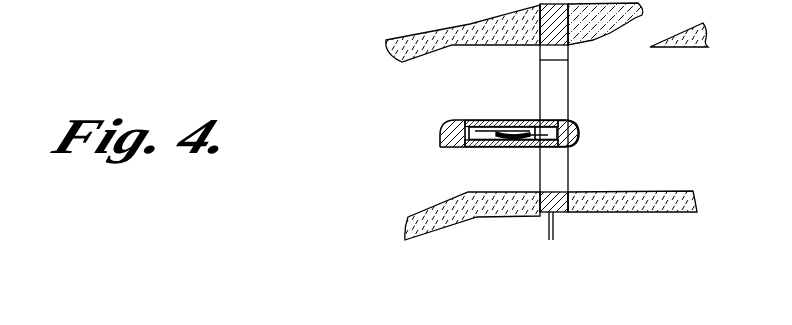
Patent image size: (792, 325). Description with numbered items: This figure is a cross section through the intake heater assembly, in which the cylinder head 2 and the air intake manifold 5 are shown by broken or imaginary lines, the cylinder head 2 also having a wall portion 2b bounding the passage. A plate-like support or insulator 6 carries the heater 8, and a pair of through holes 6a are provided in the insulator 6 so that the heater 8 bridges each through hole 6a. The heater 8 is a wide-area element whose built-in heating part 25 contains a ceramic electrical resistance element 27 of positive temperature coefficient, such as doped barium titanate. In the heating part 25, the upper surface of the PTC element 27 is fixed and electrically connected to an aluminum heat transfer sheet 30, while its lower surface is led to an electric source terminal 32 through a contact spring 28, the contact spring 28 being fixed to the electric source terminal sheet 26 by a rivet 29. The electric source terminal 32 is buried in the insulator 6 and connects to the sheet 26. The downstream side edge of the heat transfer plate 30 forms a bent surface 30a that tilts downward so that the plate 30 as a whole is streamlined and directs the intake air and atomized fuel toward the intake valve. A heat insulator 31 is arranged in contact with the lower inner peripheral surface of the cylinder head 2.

The cylinder head 2 is at (398, 62).
The partition wall 2b is at (535, 98).
The air intake manifold 5 is at (696, 50).
The insulator 6 is at (570, 55).
The through hole 6a is at (560, 162).
The heater 8 is at (503, 106).
The heating part 25 is at (485, 119).
The electric source terminal sheet 26 is at (500, 146).
The ceramic electrical resistance element 27 is at (472, 120).
The contact spring 28 is at (475, 146).
The rivet 29 is at (522, 119).
The heat transfer sheet 30 is at (455, 119).
The bent surface 30a is at (440, 130).
The heat insulator 31 is at (522, 149).
The electric source terminal 32 is at (556, 228).